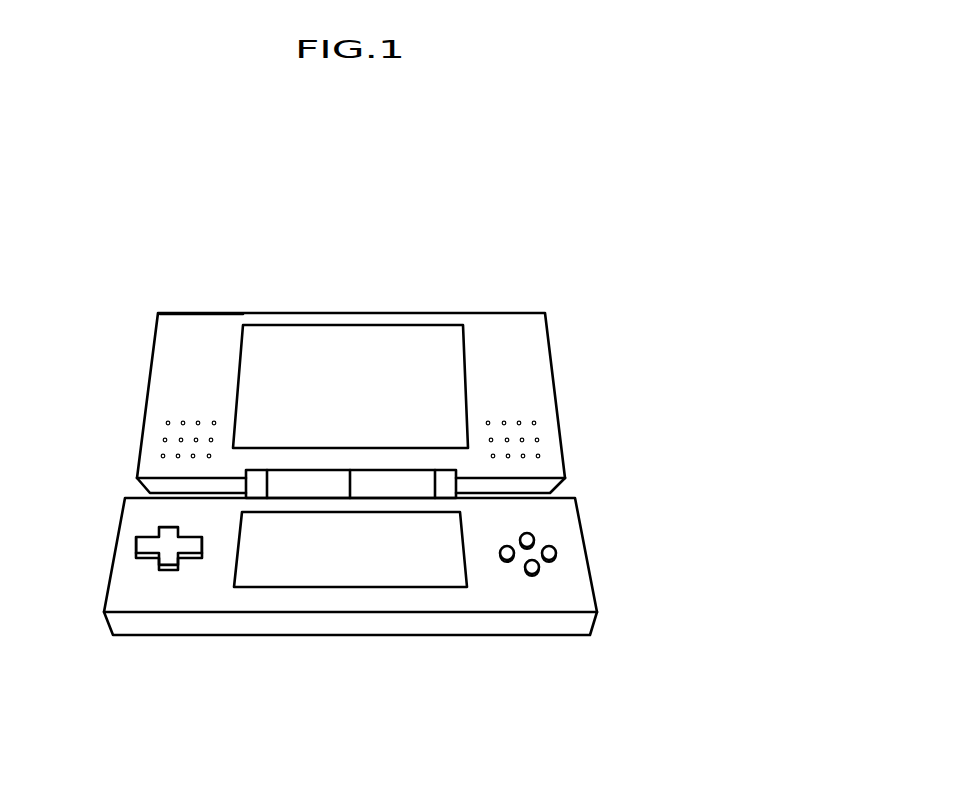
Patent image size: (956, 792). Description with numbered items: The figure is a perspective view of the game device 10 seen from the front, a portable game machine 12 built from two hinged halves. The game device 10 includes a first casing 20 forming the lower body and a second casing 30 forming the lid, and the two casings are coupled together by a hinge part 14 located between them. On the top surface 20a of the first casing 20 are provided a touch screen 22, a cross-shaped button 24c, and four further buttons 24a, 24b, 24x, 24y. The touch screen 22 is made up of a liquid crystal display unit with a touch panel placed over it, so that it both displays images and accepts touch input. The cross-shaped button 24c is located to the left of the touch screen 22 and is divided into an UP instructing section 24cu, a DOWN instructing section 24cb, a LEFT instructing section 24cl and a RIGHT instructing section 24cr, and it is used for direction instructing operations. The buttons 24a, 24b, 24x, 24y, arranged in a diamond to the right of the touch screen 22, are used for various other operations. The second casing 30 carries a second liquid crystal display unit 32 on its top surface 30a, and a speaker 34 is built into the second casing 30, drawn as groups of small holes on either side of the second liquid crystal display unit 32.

The game device 10 is at (407, 228).
The portable game machine 12 is at (496, 270).
The hinge part 14 is at (311, 469).
The first casing 20 is at (588, 567).
The top surface 20a is at (340, 602).
The touch screen 22 is at (432, 588).
The button 24a is at (556, 551).
The button 24b is at (532, 574).
The cross-shaped button 24c is at (128, 544).
The UP instructing section 24cu is at (168, 534).
The LEFT instructing section 24cl is at (140, 553).
The DOWN instructing section 24cb is at (157, 567).
The RIGHT instructing section 24cr is at (190, 547).
The button 24x is at (533, 534).
The button 24y is at (507, 560).
The second casing 30 is at (560, 373).
The top surface 30a is at (193, 330).
The second liquid crystal display unit 32 is at (465, 358).
The speaker 34 is at (161, 435).